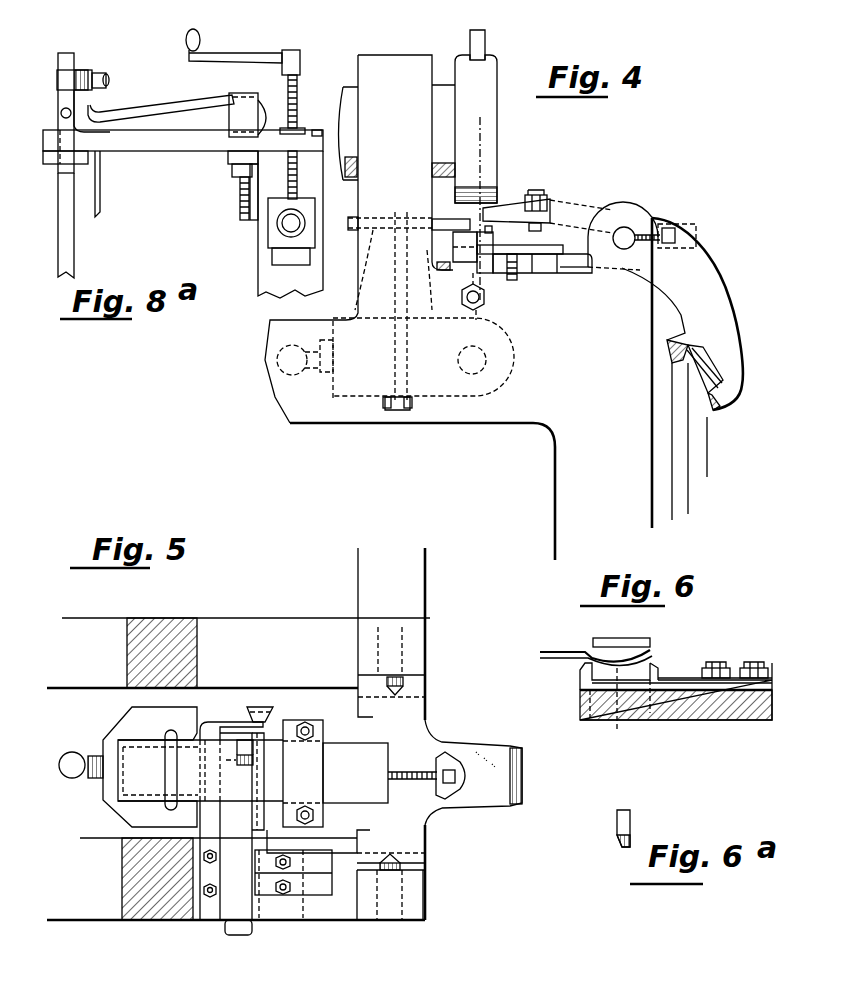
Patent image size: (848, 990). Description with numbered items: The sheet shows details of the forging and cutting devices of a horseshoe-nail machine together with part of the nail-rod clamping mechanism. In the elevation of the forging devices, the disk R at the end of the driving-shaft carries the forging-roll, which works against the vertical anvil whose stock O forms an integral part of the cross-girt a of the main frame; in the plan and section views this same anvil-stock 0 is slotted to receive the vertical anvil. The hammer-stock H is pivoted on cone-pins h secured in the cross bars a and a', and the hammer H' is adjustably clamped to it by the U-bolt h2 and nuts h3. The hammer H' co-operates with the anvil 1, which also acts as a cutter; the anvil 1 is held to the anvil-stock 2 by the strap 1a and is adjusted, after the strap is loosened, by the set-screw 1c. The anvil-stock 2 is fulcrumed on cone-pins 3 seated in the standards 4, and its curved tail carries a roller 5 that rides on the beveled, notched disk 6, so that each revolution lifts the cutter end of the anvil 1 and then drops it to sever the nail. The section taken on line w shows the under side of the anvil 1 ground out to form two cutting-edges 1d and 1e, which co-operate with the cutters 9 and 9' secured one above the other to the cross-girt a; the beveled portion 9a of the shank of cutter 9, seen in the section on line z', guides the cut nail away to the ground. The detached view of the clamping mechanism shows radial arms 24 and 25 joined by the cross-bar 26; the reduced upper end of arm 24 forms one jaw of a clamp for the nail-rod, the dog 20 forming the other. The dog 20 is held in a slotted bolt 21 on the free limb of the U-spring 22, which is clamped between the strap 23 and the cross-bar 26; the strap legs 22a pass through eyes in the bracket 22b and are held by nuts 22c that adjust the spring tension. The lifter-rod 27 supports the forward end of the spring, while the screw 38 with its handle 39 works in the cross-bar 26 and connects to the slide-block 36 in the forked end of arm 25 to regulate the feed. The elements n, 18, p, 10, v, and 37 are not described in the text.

In FIG. 8A, the dog 20 is at (71, 102).
In FIG. 8A, the bolt 21 is at (57, 82).
In FIG. 8A, the U-spring 22 is at (170, 115).
In FIG. 8A, the legs of the strap 22a is at (228, 156).
In FIG. 8A, the bracket 22b is at (232, 170).
In FIG. 8A, the nuts 22c is at (240, 184).
In FIG. 8A, the strap 23 is at (254, 92).
In FIG. 8A, the radial arm 24 is at (58, 233).
In FIG. 8A, the radial arm 25 is at (262, 292).
In FIG. 8A, the cross-bar 26 is at (166, 146).
In FIG. 8A, the lifter-rod 27 is at (111, 184).
In FIG. 8A, the slide-block 36 is at (305, 235).
In FIG. 8A, the bracket 37 is at (310, 191).
In FIG. 8A, the screw 38 is at (300, 137).
In FIG. 8A, the handle 39 is at (243, 52).
In FIG. 4, the pin n is at (480, 43).
In FIG. 4, the disk R is at (476, 129).
In FIG. 4, the section line w w is at (477, 224).
In FIG. 4, the hammer H' is at (451, 215).
In FIG. 4, the U bolt or strap h2 is at (400, 212).
In FIG. 5, the U bolt or strap h2 is at (162, 766).
In FIG. 4, the strap 1a is at (553, 206).
In FIG. 5, the strap 1a is at (277, 773).
In FIG. 4, the bolt 18 is at (539, 192).
In FIG. 5, the bolt 18 is at (312, 726).
In FIG. 4, the cone-pins 3 is at (630, 236).
In FIG. 5, the cone-pins 3 is at (426, 686).
In FIG. 4, the set-screw 1c is at (680, 230).
In FIG. 5, the set-screw 1c is at (458, 778).
In FIG. 4, the standards 4 is at (609, 236).
In FIG. 5, the standards 4 is at (414, 655).
In FIG. 4, the anvil-stock 2 is at (682, 373).
In FIG. 5, the anvil-stock 2 is at (462, 740).
In FIG. 4, the roller 5 is at (735, 378).
In FIG. 4, the cone or beveled disk 6 is at (710, 448).
In FIG. 4, the plate p is at (456, 247).
In FIG. 5, the plate p is at (236, 771).
In FIG. 4, the anvil-stock 0 is at (480, 252).
In FIG. 6, the anvil-stock 0 is at (676, 696).
In FIG. 4, the set screw 10 is at (499, 228).
In FIG. 5, the set screw 10 is at (260, 714).
In FIG. 4, the cutter 9' is at (507, 262).
In FIG. 5, the cutter 9' is at (268, 815).
In FIG. 6, the cutter 9' is at (715, 669).
In FIG. 4, the cutter 9 is at (527, 287).
In FIG. 5, the cutter 9 is at (284, 812).
In FIG. 6, the cutter 9 is at (566, 679).
In FIG. 6A, the cutter 9 is at (633, 822).
In FIG. 4, the hammer-stock H is at (417, 364).
In FIG. 5, the hammer-stock H is at (150, 767).
In FIG. 4, the cross-girt a' is at (298, 360).
In FIG. 5, the cross-girt a' is at (238, 782).
In FIG. 4, the cone-pins h is at (472, 360).
In FIG. 4, the nuts h3 is at (394, 412).
In FIG. 4, the cross-girt a is at (410, 307).
In FIG. 5, the bar v is at (231, 812).
In FIG. 5, the anvil-stock O is at (236, 834).
In FIG. 6, the beveled shank portion 9a is at (592, 712).
In FIG. 6A, the beveled shank portion 9a is at (618, 840).
In FIG. 6, the section line z' z' is at (617, 709).
In FIG. 6, the anvil 1 is at (627, 638).
In FIG. 6, the cutting-edge 1d is at (590, 650).
In FIG. 6, the cutting-edge 1e is at (652, 651).